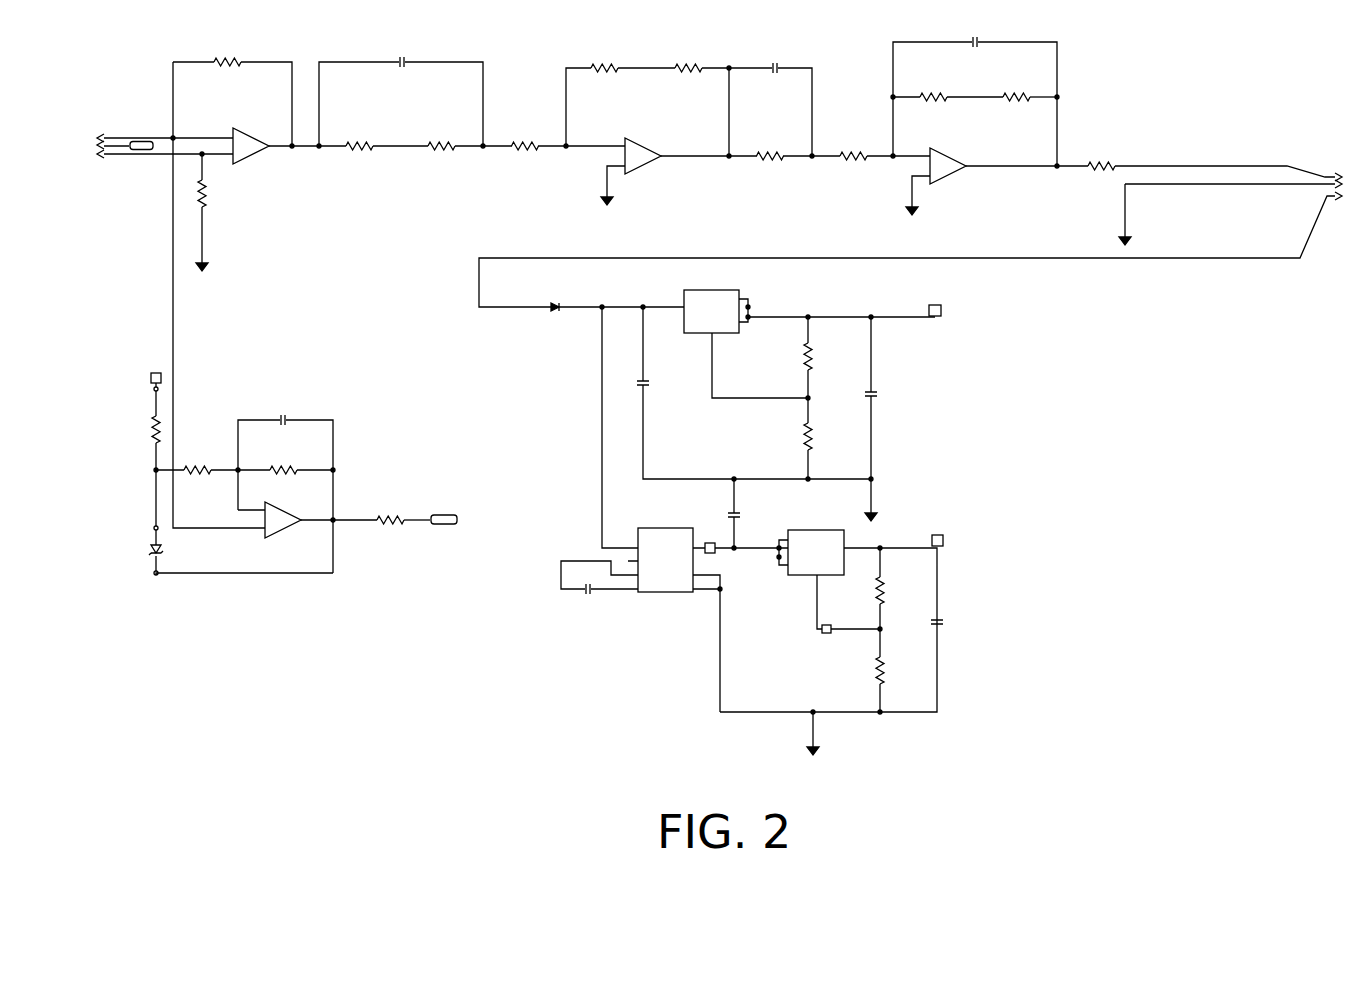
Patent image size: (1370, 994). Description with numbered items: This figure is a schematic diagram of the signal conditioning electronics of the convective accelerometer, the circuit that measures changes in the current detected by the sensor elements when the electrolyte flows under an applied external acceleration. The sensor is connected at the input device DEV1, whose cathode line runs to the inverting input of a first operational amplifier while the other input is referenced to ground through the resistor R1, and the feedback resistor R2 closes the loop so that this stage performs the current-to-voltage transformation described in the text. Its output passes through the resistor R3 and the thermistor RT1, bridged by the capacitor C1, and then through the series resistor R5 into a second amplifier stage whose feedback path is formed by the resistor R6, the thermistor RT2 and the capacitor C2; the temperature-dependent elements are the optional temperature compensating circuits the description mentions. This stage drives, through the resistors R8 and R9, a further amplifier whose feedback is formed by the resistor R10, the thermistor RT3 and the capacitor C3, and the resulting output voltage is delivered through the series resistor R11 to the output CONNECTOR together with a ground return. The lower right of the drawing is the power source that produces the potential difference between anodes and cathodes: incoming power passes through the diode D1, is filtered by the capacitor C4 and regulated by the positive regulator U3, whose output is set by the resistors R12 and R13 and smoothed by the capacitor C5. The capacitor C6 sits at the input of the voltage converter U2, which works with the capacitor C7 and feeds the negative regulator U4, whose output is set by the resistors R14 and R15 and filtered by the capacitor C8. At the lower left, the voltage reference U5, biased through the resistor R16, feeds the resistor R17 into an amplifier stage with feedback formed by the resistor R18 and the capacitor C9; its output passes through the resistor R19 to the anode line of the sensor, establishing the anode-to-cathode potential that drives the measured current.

The input device connector DEV1 is at (160, 137).
The resistor R1 TBD R1 is at (204, 212).
The feedback resistor R2 TBD R2 is at (232, 94).
The capacitor C1 0.082 C1 is at (401, 95).
The resistor R3 330 R3 is at (373, 147).
The thermistor RT1 4.7K RT1 is at (466, 147).
The resistor R5 TBD R5 is at (567, 147).
The resistor R6 330 R6 is at (620, 97).
The thermistor RT2 4.7K RT2 is at (698, 103).
The capacitor C2 0.1 C2 is at (771, 102).
The resistor R8 220K R8 is at (797, 157).
The resistor R9 TBD R9 is at (884, 157).
The capacitor C3 TBD C3 is at (976, 95).
The resistor R10 300K R10 is at (947, 98).
The thermistor RT3 220K RT3 is at (1025, 98).
The resistor R11 510 R11 is at (1211, 164).
The output connector CONNECTOR is at (920, 231).
The diode MBRS140 D1 is at (556, 308).
The capacitor C4 0.1 C4 is at (744, 394).
The voltage regulator LM317 U3 is at (811, 336).
The resistor R12 1.8K R12 is at (807, 369).
The resistor R13 7.5K R13 is at (807, 451).
The capacitor C5 0.82 C5 is at (856, 418).
The capacitor C6 10.0 C6 is at (719, 514).
The voltage converter ICL7662B U2 is at (708, 612).
The capacitor C7 10.0 C7 is at (599, 586).
The negative voltage regulator LM337 U4 is at (831, 634).
The resistor R14 1.8K R14 is at (880, 601).
The resistor R15 7.5K R15 is at (880, 685).
The capacitor C8 0.82 C8 is at (919, 626).
The resistor R16 200K R16 is at (158, 422).
The voltage reference LM285-1.2 U5 is at (205, 522).
The resistor R17 300K R17 is at (198, 469).
The capacitor C9 4.7 C9 is at (286, 486).
The resistor R18 100K R18 is at (285, 469).
The resistor R19 47 R19 is at (416, 519).